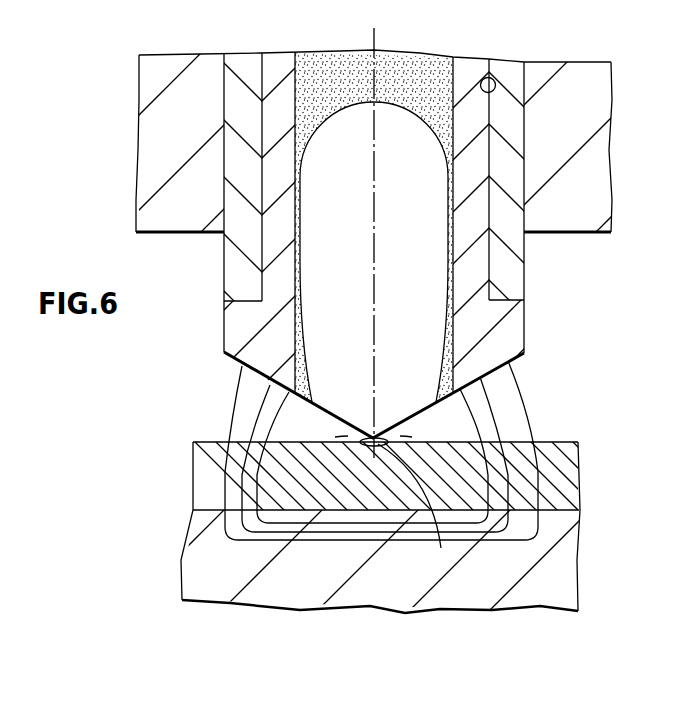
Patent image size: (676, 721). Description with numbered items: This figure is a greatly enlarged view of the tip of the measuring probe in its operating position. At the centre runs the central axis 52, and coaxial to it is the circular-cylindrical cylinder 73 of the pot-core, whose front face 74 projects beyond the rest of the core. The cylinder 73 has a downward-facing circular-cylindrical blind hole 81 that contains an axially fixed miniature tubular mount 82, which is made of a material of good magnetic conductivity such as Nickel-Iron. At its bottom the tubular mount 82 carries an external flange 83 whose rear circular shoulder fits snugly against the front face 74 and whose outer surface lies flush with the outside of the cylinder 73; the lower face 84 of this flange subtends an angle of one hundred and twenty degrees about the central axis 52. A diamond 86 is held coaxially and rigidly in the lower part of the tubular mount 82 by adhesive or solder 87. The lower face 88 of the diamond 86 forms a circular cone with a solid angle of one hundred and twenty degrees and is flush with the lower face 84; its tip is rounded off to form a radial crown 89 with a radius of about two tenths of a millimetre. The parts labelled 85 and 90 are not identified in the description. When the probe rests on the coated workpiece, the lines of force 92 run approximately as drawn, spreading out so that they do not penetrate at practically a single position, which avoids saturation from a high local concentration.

The central axis 52 is at (375, 32).
The cylinder 73 is at (507, 222).
The front face 74 is at (507, 303).
The blind hole 81 is at (494, 78).
The tubular mount 82 is at (476, 182).
The external flange 83 is at (228, 350).
The lower face 84 is at (242, 293).
The outer housing 85 is at (222, 333).
The diamond 86 is at (362, 193).
The adhesive or solder 87 is at (333, 64).
The lower face of the diamond 88 is at (416, 507).
The radial crown 89 is at (367, 432).
The conical surface 90 is at (237, 366).
The lines of force 92 is at (500, 429).